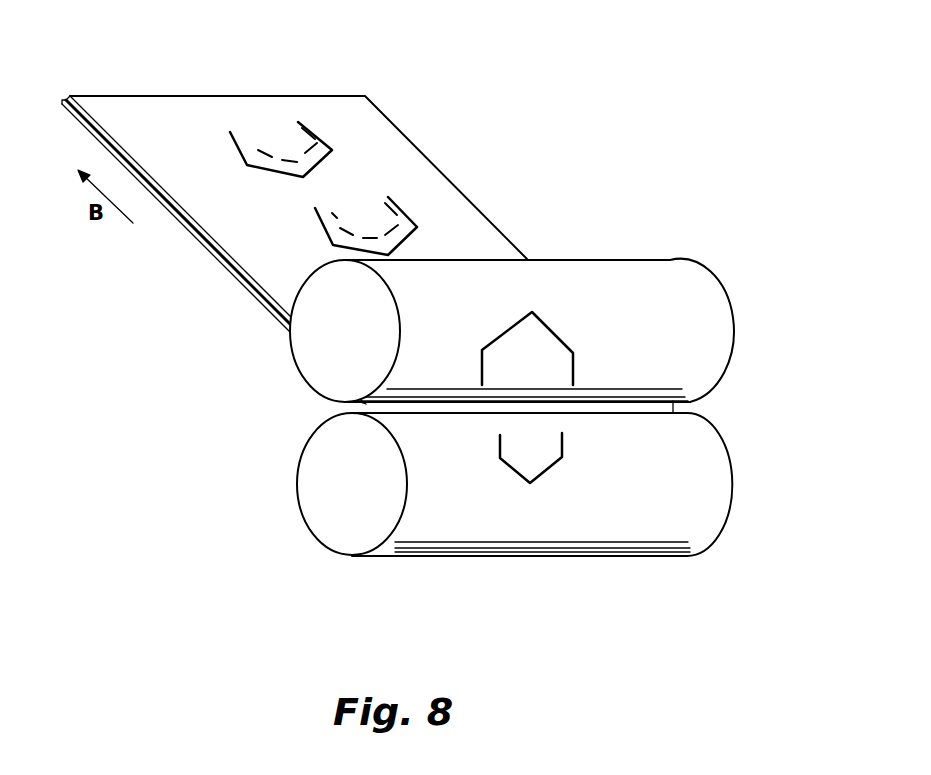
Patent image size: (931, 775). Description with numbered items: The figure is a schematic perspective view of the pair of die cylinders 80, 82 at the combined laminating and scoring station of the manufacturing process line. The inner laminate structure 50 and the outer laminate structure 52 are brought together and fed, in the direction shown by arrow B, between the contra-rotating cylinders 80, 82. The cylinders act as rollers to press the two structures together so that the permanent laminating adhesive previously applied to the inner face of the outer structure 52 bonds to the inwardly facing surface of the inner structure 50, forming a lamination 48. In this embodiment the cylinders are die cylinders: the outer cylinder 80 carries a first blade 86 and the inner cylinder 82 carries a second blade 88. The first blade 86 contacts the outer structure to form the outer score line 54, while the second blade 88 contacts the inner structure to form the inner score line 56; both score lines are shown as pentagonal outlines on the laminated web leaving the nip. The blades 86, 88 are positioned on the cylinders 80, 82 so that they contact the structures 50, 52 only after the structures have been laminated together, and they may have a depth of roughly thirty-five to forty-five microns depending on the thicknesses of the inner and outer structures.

The receiver sheet 48 is at (385, 110).
The inner laminate structure 50 is at (198, 248).
The outer laminate structure 52 is at (432, 195).
The outer score line 54 is at (318, 127).
The inner score line 56 is at (253, 143).
The outer cylinder 80 is at (683, 277).
The inner cylinder 82 is at (705, 518).
The first blade 86 is at (560, 328).
The second blade 88 is at (548, 462).